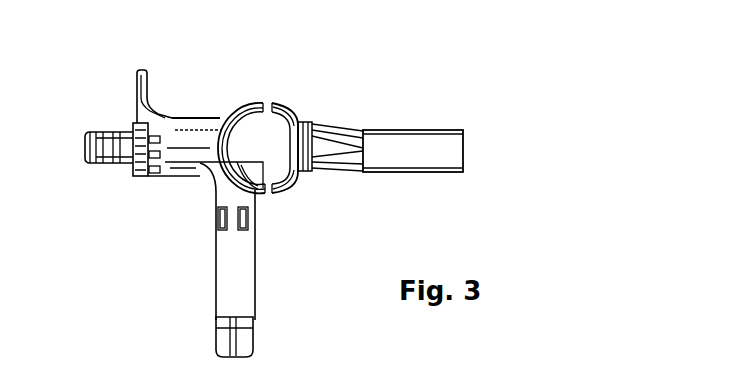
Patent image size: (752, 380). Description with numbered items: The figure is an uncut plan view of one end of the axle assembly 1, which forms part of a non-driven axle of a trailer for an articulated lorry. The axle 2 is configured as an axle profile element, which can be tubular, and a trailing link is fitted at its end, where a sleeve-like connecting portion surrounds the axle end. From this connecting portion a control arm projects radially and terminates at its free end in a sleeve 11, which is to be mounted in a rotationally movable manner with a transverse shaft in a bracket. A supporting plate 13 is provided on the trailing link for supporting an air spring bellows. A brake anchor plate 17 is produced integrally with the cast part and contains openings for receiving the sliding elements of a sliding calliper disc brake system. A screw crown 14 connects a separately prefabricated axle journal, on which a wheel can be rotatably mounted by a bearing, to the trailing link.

The axle assembly 1 is at (193, 202).
The axle 2 is at (416, 172).
The sleeve 11 is at (220, 342).
The supporting plate 13 is at (273, 141).
The screw crown 14 is at (134, 176).
The brake anchor plate 17 is at (150, 88).